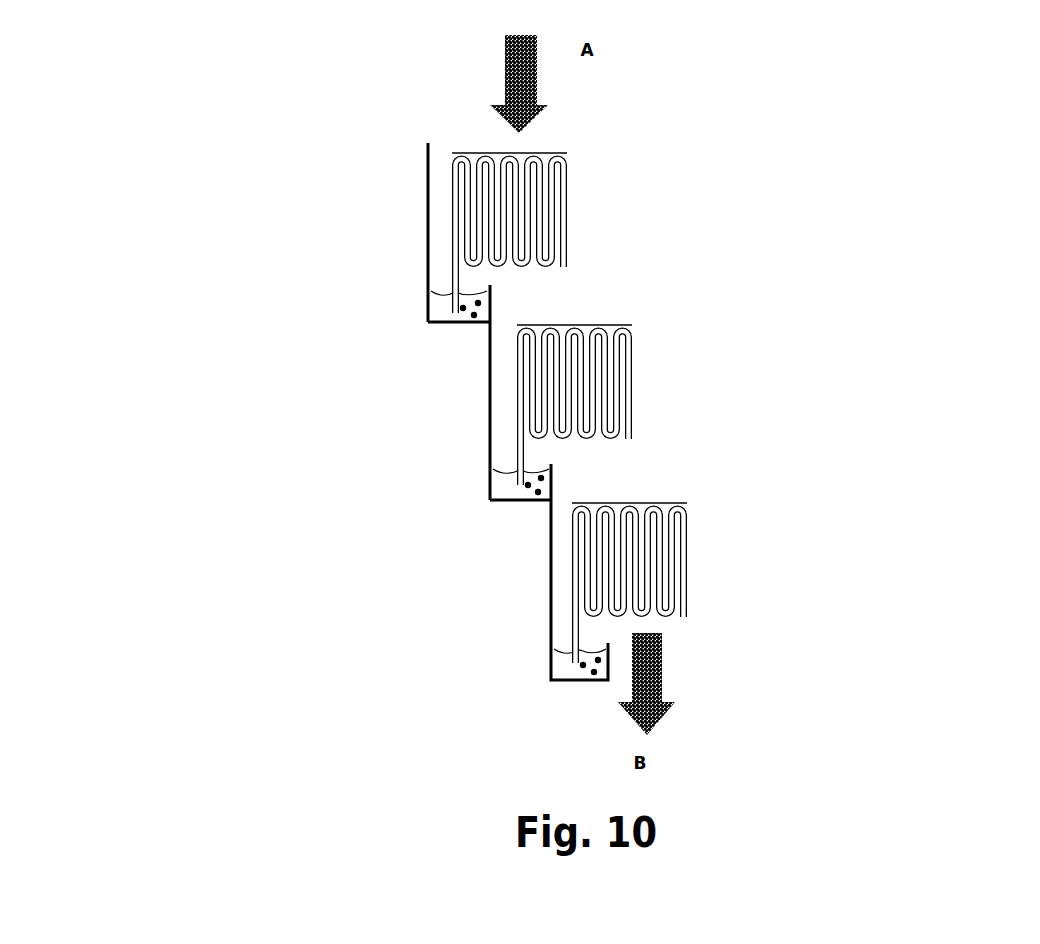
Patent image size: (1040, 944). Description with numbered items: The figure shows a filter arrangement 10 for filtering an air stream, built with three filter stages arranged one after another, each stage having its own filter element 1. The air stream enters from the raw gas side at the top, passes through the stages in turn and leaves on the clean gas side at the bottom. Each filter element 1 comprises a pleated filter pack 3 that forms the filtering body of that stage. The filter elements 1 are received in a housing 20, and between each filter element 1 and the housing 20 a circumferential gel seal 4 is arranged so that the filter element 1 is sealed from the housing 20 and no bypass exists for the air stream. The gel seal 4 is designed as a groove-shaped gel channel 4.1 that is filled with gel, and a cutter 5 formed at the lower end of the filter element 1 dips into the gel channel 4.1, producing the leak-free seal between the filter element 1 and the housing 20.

The filter arrangement 10 is at (553, 393).
The filter element 1 is at (538, 411).
The filter pack 3 is at (567, 180).
The housing 20 is at (424, 285).
The gel seal 4 is at (262, 395).
The gel channel 4.1 is at (490, 482).
The cutter 5 is at (490, 488).